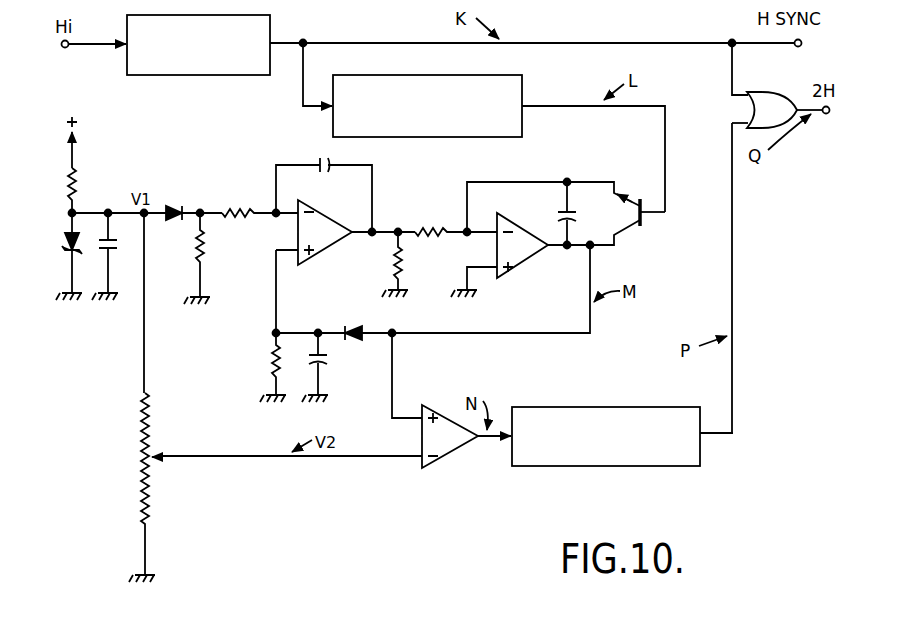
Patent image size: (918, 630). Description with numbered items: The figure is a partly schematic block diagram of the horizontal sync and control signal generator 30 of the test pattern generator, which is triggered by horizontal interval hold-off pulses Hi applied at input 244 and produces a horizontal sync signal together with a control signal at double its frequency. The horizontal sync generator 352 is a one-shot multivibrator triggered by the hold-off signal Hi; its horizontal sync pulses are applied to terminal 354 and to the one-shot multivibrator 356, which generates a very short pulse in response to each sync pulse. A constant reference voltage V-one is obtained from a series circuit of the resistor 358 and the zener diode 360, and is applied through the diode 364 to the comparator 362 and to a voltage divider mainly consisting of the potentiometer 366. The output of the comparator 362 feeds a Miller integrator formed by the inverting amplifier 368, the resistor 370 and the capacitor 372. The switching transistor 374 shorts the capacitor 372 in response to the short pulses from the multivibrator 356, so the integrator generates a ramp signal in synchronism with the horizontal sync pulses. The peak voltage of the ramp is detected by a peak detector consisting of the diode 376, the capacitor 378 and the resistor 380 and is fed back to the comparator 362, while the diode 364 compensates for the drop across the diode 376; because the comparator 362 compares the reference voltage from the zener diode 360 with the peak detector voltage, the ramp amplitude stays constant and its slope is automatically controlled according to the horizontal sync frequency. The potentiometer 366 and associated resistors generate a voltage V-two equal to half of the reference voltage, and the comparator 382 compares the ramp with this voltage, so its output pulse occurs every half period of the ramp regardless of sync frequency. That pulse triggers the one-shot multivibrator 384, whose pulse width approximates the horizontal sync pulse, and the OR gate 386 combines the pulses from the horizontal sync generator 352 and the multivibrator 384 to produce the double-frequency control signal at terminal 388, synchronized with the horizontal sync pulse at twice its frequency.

The horizontal sync and control signal generator 30 is at (268, 518).
The Hi input terminal 244 is at (66, 49).
The horizontal sync generator 352 is at (195, 76).
The terminal 354 is at (798, 49).
The one-shot multivibrator 356 is at (518, 75).
The resistor 358 is at (78, 174).
The zener diode 360 is at (82, 254).
The comparator 362 is at (314, 257).
The diode 364 is at (231, 209).
The potentiometer 366 is at (138, 458).
The inverting amplifier 368 is at (514, 267).
The resistor 370 is at (436, 228).
The capacitor 372 is at (558, 212).
The switching transistor 374 is at (625, 231).
The diode 376 is at (359, 325).
The capacitor 378 is at (330, 360).
The resistor 380 is at (272, 351).
The comparator 382 is at (428, 466).
The one-shot multivibrator 384 is at (625, 467).
The OR gate 386 is at (746, 110).
The terminal 388 is at (826, 116).